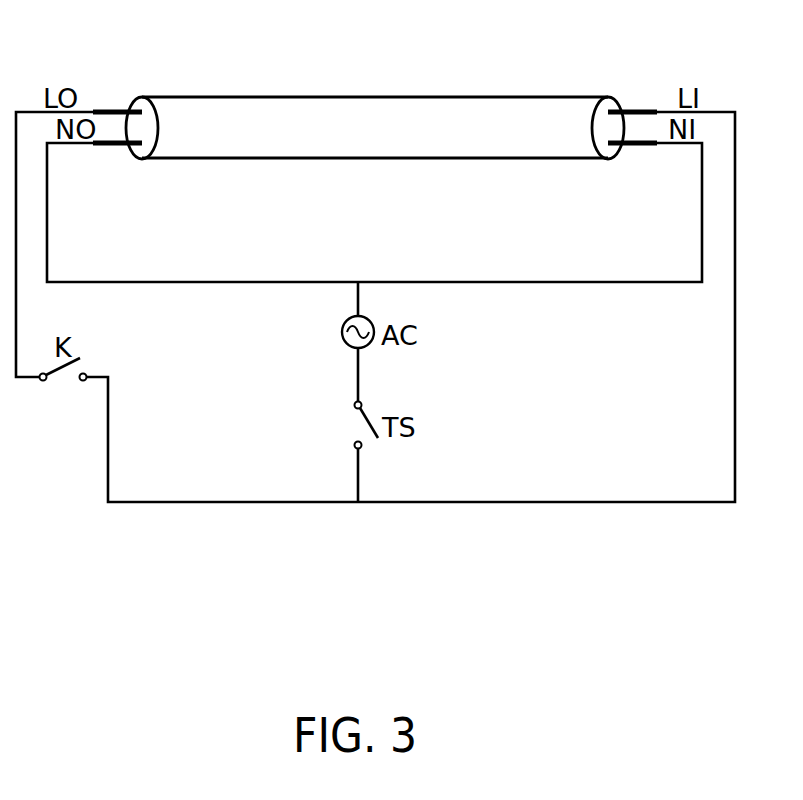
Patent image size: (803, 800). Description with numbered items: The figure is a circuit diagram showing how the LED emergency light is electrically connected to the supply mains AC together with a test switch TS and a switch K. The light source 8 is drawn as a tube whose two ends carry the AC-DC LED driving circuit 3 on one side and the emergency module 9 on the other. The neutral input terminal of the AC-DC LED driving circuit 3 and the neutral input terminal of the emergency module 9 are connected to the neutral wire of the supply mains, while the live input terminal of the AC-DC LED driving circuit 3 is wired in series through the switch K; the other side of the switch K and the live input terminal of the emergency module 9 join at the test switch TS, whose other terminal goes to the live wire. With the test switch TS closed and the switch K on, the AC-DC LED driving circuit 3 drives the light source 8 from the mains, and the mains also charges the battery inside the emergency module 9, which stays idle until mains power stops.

The AC-DC LED driving circuit 3 is at (145, 98).
The light source 8 is at (479, 99).
The emergency module 9 is at (606, 98).